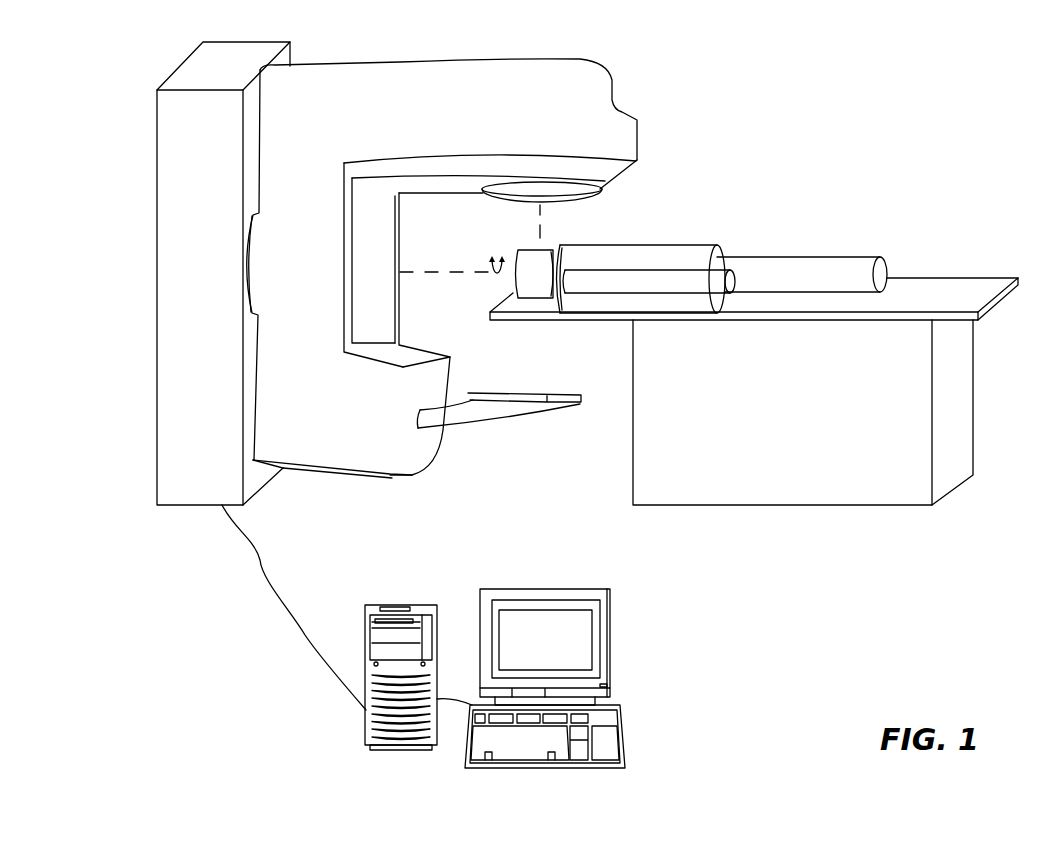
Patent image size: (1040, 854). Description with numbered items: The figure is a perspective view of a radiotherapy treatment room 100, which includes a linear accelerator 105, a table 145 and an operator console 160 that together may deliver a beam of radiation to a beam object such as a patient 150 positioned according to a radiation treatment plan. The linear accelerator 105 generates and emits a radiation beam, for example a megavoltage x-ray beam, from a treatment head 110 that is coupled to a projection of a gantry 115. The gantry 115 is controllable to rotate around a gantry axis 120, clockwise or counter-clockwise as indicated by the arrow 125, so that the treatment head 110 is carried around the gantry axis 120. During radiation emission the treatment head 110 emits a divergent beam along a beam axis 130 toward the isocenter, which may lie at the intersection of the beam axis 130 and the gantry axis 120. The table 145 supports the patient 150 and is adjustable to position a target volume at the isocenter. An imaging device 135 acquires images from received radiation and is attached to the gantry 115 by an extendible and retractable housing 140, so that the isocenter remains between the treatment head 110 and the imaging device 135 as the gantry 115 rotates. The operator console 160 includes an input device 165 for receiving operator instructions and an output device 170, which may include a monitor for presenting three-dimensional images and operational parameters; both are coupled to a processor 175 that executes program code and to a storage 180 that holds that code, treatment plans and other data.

The radiotherapy treatment room 100 is at (882, 109).
The linear accelerator 105 is at (665, 111).
The treatment head 110 is at (627, 175).
The gantry 115 is at (425, 62).
The gantry axis 120 is at (470, 275).
The arrow 125 is at (493, 257).
The beam axis 130 is at (543, 227).
The imaging device 135 is at (581, 402).
The extendible and retractable housing 140 is at (477, 428).
The table 145 is at (938, 290).
The patient 150 is at (682, 243).
The operator console 160 is at (645, 630).
The input device 165 is at (627, 750).
The output device 170 is at (610, 638).
The processor 175 is at (415, 648).
The storage 180 is at (398, 605).